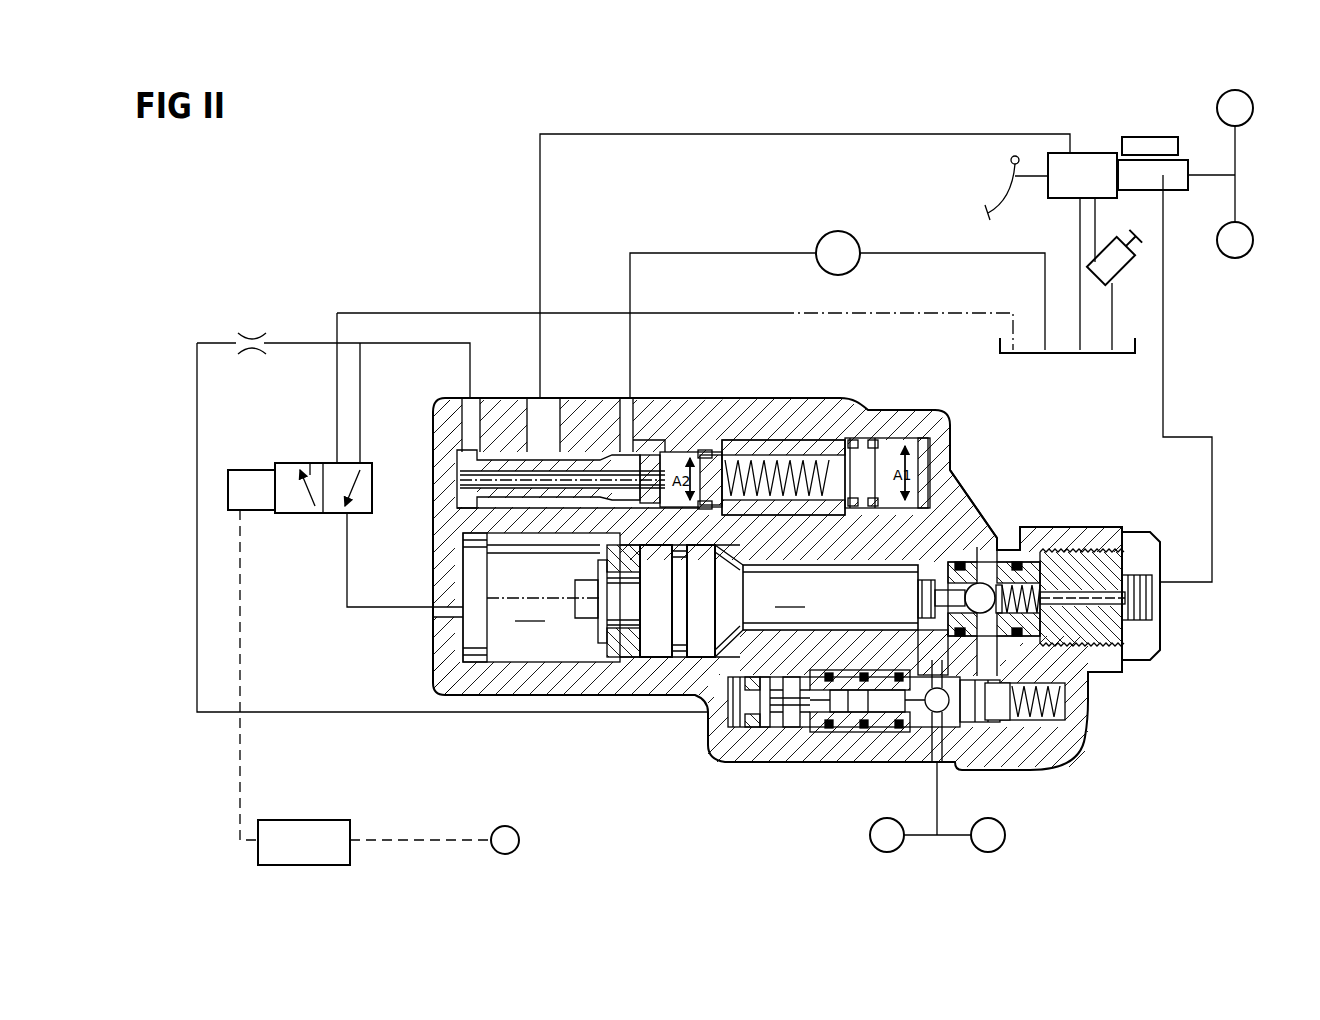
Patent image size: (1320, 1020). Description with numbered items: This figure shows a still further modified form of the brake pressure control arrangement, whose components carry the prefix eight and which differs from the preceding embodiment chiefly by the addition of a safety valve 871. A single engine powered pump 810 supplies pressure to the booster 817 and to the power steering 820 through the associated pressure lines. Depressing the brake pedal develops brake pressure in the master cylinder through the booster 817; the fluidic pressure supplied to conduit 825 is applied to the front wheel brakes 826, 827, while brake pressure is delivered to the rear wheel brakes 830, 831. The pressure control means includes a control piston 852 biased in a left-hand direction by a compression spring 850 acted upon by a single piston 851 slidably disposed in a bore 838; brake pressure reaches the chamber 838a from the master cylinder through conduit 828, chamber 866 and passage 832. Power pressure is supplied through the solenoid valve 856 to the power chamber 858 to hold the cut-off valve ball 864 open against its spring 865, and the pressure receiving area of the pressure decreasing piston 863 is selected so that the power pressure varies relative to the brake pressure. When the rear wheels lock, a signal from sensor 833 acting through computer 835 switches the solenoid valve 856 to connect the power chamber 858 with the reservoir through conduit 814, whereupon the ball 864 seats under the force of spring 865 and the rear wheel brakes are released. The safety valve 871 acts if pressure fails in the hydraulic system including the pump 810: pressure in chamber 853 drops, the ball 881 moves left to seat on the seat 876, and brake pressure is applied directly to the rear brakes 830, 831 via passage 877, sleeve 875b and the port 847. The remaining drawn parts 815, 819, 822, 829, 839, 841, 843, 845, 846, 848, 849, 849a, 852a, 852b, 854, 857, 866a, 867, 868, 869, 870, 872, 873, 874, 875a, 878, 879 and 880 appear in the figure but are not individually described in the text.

The pump 810 is at (826, 235).
The conduit 814 is at (936, 312).
The supply line 815 is at (916, 134).
The booster 817 is at (1106, 153).
The drain line 819 is at (1094, 240).
The power steering 820 is at (1113, 281).
The reservoir 822 is at (1113, 332).
The conduit 825 is at (1218, 165).
The front wheel brake 826 is at (1248, 98).
The front wheel brake 827 is at (1228, 260).
The conduit 828 is at (1213, 530).
The line 829 is at (936, 838).
The rear wheel brake 830 is at (872, 845).
The rear wheel brake 831 is at (1004, 840).
The passage 832 is at (940, 500).
The sensor 833 is at (518, 838).
The computer 835 is at (308, 820).
The bore 838 is at (842, 438).
The chamber 838a is at (924, 438).
The spring sleeve 839 is at (776, 440).
The port 841 is at (645, 398).
The chamber 843 is at (543, 398).
The housing 845 is at (556, 704).
The hex plug 846 is at (1160, 604).
The port 847 is at (933, 735).
The threaded plug 848 is at (1105, 540).
The sleeve 849 is at (495, 458).
The port 849a is at (612, 400).
The compression spring 850 is at (742, 460).
The piston 851 is at (862, 445).
The control piston 852 is at (560, 530).
The seal ring 852a is at (652, 455).
The shoulder 852b is at (500, 520).
The chamber 853 is at (460, 479).
The port 854 is at (468, 400).
The solenoid valve 856 is at (285, 513).
The port 857 is at (440, 614).
The power chamber 858 is at (541, 597).
The pressure decreasing piston 863 is at (769, 601).
The cut-off valve ball 864 is at (984, 590).
The spring 865 is at (1062, 560).
The chamber 866 is at (1030, 582).
The spring seat 866a is at (1005, 578).
The passage 867 is at (875, 660).
The line 868 is at (340, 712).
The line 869 is at (283, 343).
The lower valve body 870 is at (710, 728).
The safety valve 871 is at (660, 735).
The port 872 is at (733, 730).
The chamber 873 is at (1082, 737).
The spring 874 is at (1035, 725).
The sleeve 875a is at (848, 732).
The sleeve 875b is at (1000, 760).
The seat 876 is at (898, 740).
The passage 877 is at (993, 653).
The seal rings 878 is at (790, 728).
The passage 879 is at (947, 762).
The valve seat 880 is at (955, 548).
The ball 881 is at (922, 672).